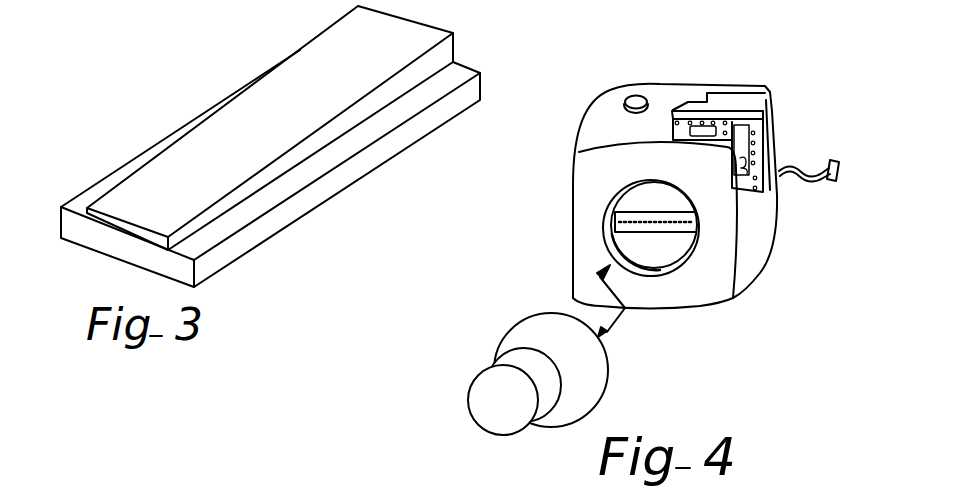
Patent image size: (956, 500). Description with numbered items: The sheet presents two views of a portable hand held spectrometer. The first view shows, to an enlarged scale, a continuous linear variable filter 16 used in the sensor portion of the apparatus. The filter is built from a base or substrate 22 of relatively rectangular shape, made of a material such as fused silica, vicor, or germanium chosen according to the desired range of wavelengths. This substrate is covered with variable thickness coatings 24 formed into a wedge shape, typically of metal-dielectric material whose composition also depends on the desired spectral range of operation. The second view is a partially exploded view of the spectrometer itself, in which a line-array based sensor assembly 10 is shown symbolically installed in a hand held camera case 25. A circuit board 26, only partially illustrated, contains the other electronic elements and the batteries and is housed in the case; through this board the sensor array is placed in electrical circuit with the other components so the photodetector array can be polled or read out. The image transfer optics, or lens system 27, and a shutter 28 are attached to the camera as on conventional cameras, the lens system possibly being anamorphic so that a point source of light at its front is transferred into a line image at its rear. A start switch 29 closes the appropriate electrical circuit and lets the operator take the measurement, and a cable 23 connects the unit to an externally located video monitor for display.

In FIG. 3, the linear variable filter 16 is at (270, 144).
In FIG. 3, the base or substrate 22 is at (383, 150).
In FIG. 3, the variable thickness coatings 24 is at (310, 43).
In FIG. 4, the hand held camera case 25 is at (664, 180).
In FIG. 4, the line-array based sensor assembly 10 is at (630, 210).
In FIG. 4, the start switch 29 is at (631, 94).
In FIG. 4, the circuit board 26 is at (751, 131).
In FIG. 4, the cable 23 is at (806, 182).
In FIG. 4, the lens system 27 is at (471, 386).
In FIG. 4, the shutter 28 is at (588, 394).